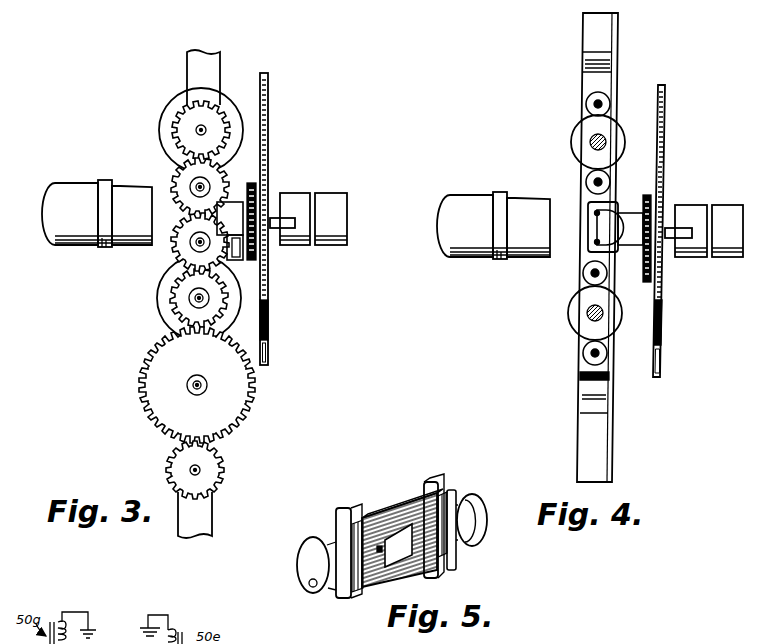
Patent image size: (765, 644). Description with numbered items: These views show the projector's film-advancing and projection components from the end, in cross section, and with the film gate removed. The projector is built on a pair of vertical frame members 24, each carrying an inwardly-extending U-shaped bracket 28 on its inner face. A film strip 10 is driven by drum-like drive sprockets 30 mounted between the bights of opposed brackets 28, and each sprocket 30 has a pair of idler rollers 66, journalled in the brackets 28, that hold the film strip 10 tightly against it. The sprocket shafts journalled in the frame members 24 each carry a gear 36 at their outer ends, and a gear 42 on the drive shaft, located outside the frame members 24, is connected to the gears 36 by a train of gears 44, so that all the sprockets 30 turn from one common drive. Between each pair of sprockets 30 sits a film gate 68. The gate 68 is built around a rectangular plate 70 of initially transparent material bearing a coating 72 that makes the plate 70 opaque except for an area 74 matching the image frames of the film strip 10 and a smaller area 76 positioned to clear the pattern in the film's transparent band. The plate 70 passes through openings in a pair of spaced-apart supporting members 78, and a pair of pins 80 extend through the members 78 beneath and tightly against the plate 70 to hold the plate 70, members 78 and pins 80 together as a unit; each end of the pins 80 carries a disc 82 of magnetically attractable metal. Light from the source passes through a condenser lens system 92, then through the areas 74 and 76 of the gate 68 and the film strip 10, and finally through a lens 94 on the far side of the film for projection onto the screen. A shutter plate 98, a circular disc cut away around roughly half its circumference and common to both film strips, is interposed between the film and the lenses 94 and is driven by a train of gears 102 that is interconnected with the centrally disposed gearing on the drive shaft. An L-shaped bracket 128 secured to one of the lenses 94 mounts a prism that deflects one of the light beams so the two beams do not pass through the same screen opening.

In FIG. 4, the film strip 10 is at (568, 313).
In FIG. 3, the vertical frame member 24 is at (200, 522).
In FIG. 4, the U-shaped bracket 28 is at (585, 265).
In FIG. 3, the drive sprocket 30 is at (180, 115).
In FIG. 4, the drive sprocket 30 is at (613, 132).
In FIG. 3, the gear 36 is at (213, 120).
In FIG. 3, the gear 42 is at (212, 470).
In FIG. 3, the train of gears 44 is at (190, 300).
In FIG. 4, the idler roller 66 is at (586, 105).
In FIG. 4, the film gate 68 is at (619, 202).
In FIG. 5, the film gate 68 is at (458, 579).
In FIG. 5, the plate 70 is at (386, 504).
In FIG. 5, the coating 72 is at (400, 570).
In FIG. 5, the area 74 is at (400, 536).
In FIG. 5, the smaller area 76 is at (380, 555).
In FIG. 5, the supporting member 78 is at (352, 508).
In FIG. 5, the pin 80 is at (482, 520).
In FIG. 5, the disc 82 is at (311, 575).
In FIG. 3, the condenser lens system 92 is at (84, 191).
In FIG. 4, the condenser lens system 92 is at (473, 199).
In FIG. 3, the lens 94 is at (333, 193).
In FIG. 4, the lens 94 is at (725, 206).
In FIG. 3, the shutter plate 98 is at (270, 323).
In FIG. 4, the shutter plate 98 is at (664, 336).
In FIG. 3, the train of gears 102 is at (239, 210).
In FIG. 4, the train of gears 102 is at (634, 244).
In FIG. 3, the L-shaped bracket 128 is at (272, 230).
In FIG. 4, the L-shaped bracket 128 is at (670, 238).